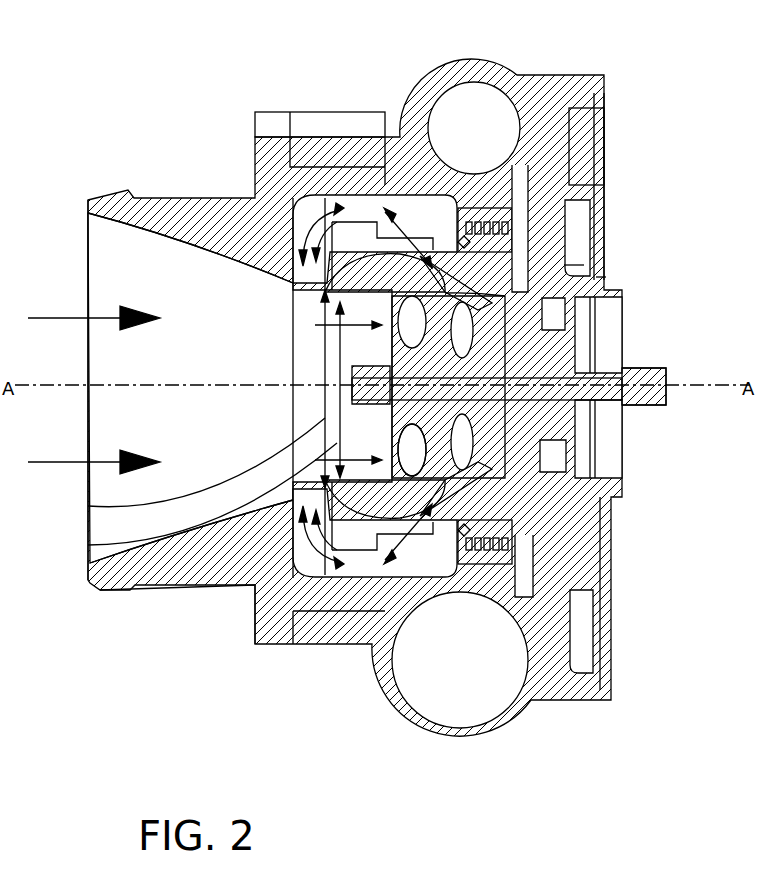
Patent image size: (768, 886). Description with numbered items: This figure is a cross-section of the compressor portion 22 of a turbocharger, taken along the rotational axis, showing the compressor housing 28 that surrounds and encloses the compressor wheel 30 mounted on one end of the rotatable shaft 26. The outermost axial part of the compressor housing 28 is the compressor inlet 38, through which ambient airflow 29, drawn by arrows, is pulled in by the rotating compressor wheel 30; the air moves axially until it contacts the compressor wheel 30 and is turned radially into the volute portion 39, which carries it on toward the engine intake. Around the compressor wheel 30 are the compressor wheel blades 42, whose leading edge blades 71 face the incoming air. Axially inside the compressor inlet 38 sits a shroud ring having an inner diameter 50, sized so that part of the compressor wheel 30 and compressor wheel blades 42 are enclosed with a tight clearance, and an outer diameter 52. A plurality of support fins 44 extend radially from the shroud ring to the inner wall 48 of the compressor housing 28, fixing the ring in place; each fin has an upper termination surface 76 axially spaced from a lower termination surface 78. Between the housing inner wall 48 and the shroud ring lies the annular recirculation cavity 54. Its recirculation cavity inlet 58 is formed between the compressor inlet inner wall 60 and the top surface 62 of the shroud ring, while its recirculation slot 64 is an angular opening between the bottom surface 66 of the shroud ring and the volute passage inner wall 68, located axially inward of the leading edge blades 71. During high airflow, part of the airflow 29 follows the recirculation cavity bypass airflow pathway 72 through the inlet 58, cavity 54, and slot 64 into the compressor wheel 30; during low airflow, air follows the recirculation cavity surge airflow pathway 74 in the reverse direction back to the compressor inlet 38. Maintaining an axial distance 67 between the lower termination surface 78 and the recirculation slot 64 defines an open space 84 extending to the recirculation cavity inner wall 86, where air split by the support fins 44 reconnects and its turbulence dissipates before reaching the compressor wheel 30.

The compressor portion 22 is at (116, 113).
The rotatable shaft 26 is at (645, 393).
The compressor housing 28 is at (552, 95).
The airflow 29 is at (68, 318).
The compressor wheel 30 is at (527, 337).
The compressor inlet 38 is at (115, 275).
The volute portion 39 is at (490, 110).
The compressor wheel blades 42 is at (595, 470).
The support fins 44 is at (347, 243).
The inner wall of the compressor housing 48 is at (390, 205).
The inner diameter 50 is at (90, 545).
The outer diameter 52 is at (88, 506).
The recirculation cavity 54 is at (414, 205).
The recirculation cavity inlet 58 is at (265, 578).
The compressor inlet inner wall 60 is at (240, 578).
The top surface 62 is at (293, 268).
The recirculation slot 64 is at (481, 312).
The bottom surface 66 is at (500, 512).
The axial distance 67 is at (566, 263).
The volute passage inner wall 68 is at (602, 277).
The leading edge blades 71 is at (437, 431).
The recirculation cavity bypass airflow pathway 72 is at (320, 230).
The recirculation cavity surge airflow pathway 74 is at (305, 240).
The upper termination surface 76 is at (255, 644).
The lower termination surface 78 is at (370, 587).
The open space 84 is at (384, 325).
The recirculation cavity inner wall 86 is at (507, 173).